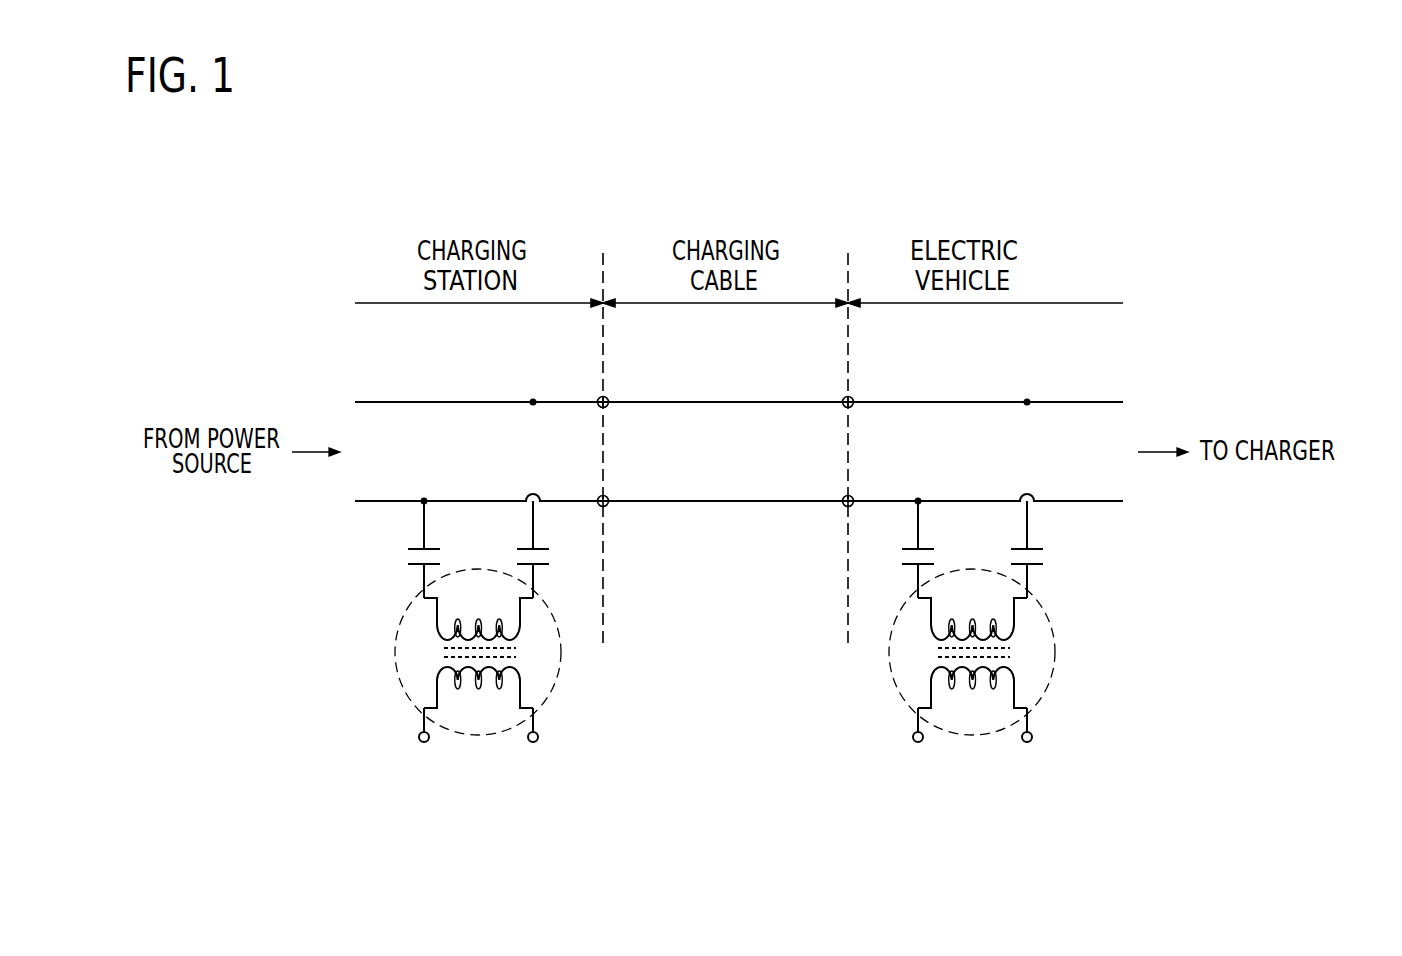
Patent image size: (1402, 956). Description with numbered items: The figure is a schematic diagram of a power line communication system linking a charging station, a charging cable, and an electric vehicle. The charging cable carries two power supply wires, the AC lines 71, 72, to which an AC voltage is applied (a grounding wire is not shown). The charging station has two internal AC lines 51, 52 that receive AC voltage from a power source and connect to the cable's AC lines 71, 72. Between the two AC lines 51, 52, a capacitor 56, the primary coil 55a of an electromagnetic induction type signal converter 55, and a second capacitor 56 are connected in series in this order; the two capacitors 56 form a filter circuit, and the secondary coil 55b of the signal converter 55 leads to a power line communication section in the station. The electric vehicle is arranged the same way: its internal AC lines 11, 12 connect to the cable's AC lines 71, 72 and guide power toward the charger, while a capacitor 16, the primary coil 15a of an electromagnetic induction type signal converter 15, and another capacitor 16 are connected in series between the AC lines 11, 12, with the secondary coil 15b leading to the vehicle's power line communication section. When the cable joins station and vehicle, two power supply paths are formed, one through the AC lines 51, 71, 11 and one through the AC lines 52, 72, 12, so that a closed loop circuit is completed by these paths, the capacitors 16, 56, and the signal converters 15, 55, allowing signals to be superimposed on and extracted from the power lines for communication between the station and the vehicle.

The AC line 52 is at (558, 400).
The AC line 51 is at (566, 500).
The AC line 72 is at (717, 400).
The AC line 71 is at (735, 505).
The AC line 12 is at (903, 400).
The AC line 11 is at (885, 500).
The capacitor 56 is at (395, 553).
The electromagnetic induction type signal converter 55 is at (436, 655).
The primary coil 55a is at (428, 622).
The secondary coil 55b is at (430, 681).
The capacitor 16 is at (902, 560).
The electromagnetic induction type signal converter 15 is at (1015, 655).
The primary coil 15a is at (1020, 622).
The secondary coil 15b is at (1022, 681).